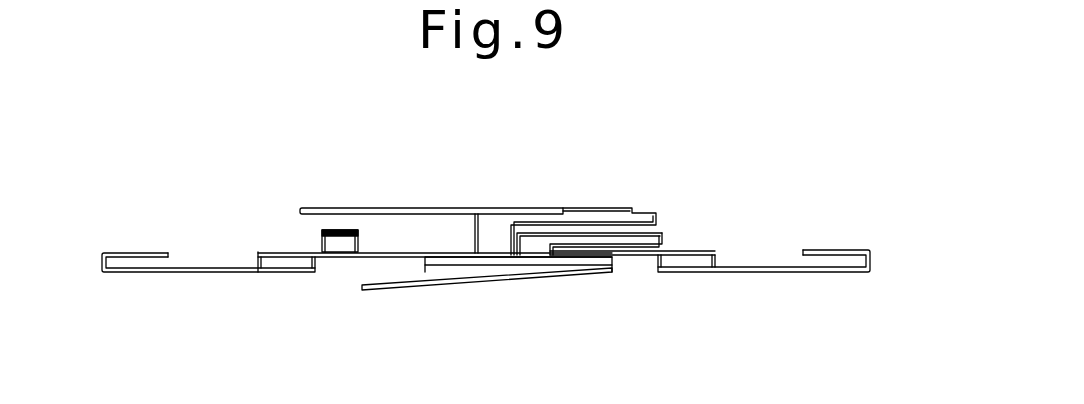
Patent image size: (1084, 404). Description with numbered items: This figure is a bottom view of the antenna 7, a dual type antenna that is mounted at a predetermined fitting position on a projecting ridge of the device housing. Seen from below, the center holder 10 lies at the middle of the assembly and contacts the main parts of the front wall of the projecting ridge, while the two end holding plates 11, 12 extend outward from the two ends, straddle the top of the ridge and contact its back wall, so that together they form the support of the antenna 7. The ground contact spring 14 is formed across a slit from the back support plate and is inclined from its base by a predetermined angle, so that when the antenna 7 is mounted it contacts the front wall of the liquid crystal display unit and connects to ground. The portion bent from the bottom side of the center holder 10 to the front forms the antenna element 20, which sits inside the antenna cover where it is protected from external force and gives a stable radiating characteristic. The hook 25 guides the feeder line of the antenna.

The antenna 7 is at (653, 200).
The center holder 10 is at (390, 252).
The end holding plate 11 is at (217, 273).
The end holding plate 12 is at (785, 273).
The ground contact spring 14 is at (408, 289).
The antenna element 20 is at (447, 205).
The hook 25 is at (340, 230).